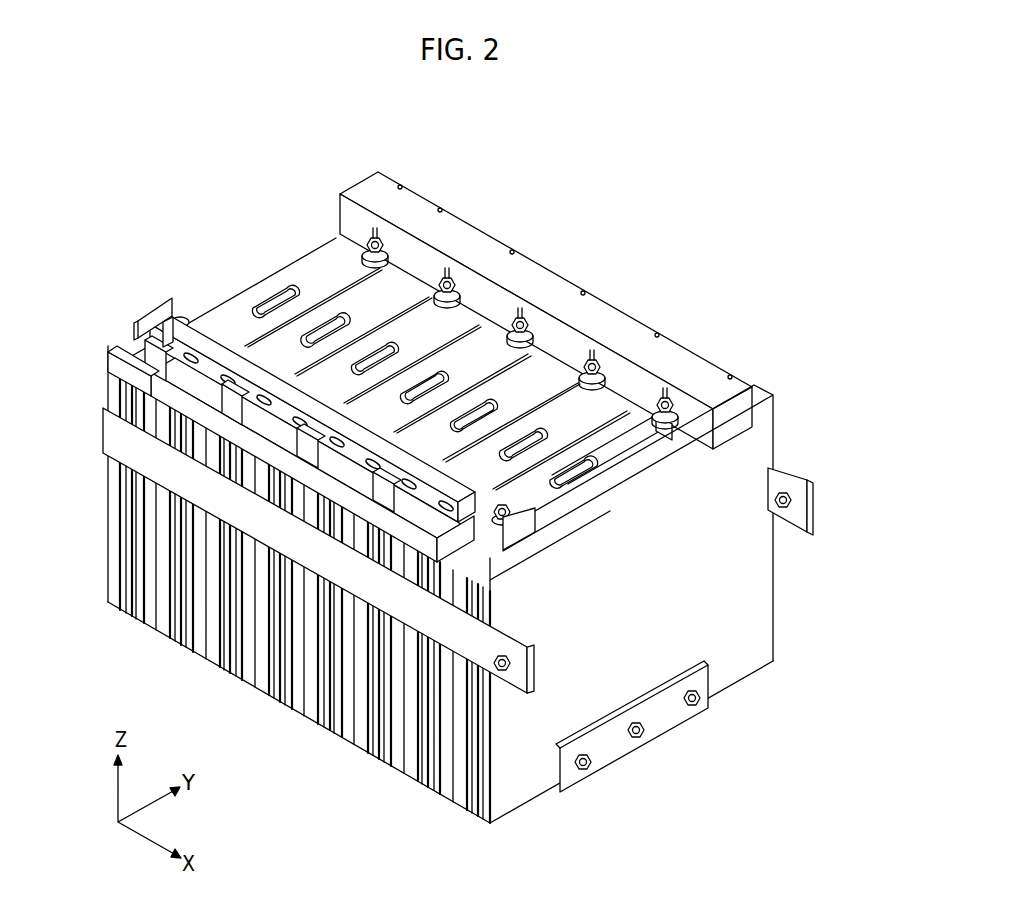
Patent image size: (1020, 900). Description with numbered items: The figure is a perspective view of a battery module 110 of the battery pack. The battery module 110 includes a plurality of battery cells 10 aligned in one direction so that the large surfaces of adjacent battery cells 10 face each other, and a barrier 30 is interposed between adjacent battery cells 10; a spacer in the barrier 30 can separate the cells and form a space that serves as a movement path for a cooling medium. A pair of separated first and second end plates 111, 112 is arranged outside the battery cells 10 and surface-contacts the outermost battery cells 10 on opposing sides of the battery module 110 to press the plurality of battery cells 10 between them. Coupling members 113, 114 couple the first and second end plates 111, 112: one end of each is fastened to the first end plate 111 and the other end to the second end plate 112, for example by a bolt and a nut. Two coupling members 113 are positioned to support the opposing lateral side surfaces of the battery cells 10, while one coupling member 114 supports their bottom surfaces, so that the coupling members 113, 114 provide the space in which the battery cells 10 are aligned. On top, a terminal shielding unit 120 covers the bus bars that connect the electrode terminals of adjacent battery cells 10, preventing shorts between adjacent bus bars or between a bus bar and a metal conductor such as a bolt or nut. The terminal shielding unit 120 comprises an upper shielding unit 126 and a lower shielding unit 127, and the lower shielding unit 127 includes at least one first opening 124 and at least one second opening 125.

The battery module 110 is at (681, 205).
The first end plate 111 is at (108, 532).
The second end plate 112 is at (760, 600).
The coupling member 113 is at (788, 470).
The coupling member 114 is at (558, 790).
The terminal shielding unit 120 is at (208, 121).
The first opening 124 is at (161, 338).
The second opening 125 is at (340, 211).
The upper shielding unit 126 is at (365, 186).
The lower shielding unit 127 is at (194, 184).
The battery cell 10 is at (178, 612).
The barrier 30 is at (148, 608).